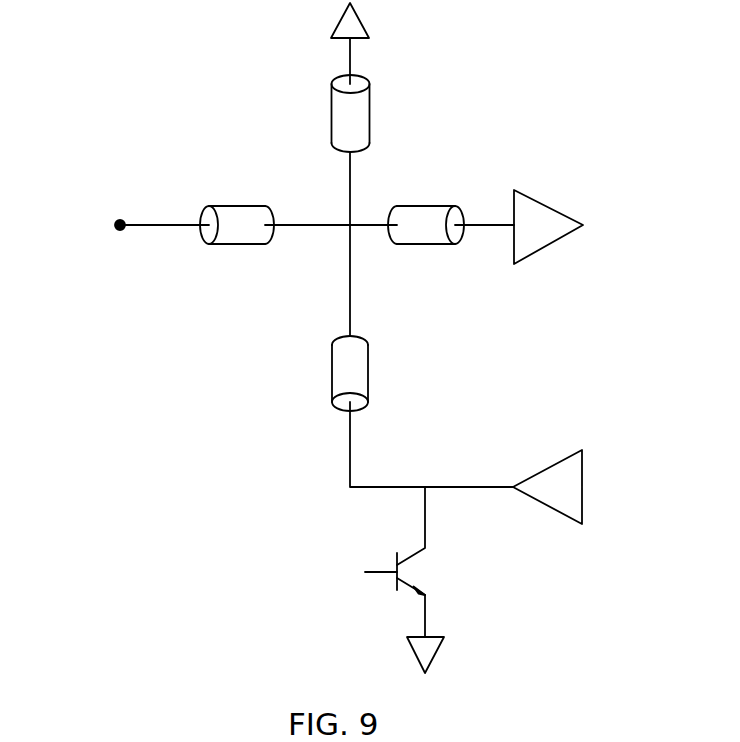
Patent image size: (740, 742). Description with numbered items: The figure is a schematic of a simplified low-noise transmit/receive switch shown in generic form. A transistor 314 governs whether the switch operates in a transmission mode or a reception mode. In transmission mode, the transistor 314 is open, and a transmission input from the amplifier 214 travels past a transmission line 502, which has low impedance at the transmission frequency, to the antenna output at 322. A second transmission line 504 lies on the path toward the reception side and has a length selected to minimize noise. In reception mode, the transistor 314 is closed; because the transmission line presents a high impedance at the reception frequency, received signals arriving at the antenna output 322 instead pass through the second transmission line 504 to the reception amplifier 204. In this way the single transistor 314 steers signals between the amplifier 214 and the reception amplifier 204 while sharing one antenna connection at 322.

The antenna output 322 is at (119, 224).
The second transmission line 504 is at (427, 244).
The transmission line 502 is at (331, 375).
The reception amplifier 204 is at (539, 189).
The amplifier 214 is at (538, 460).
The transistor 314 is at (365, 572).